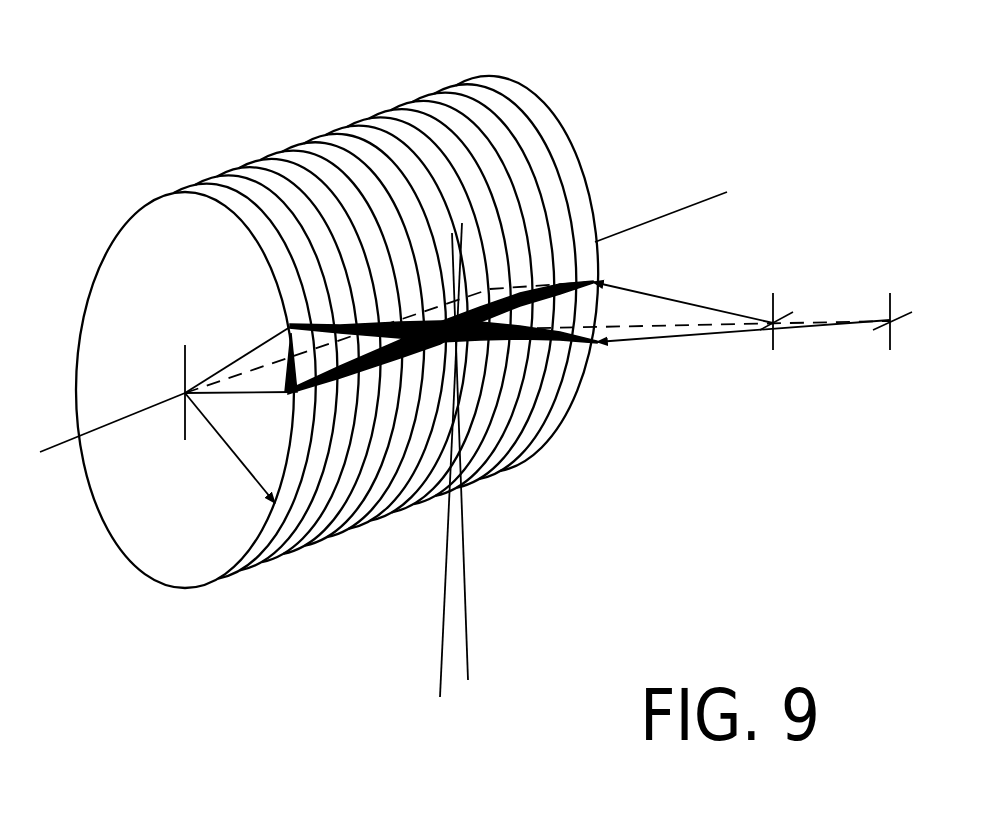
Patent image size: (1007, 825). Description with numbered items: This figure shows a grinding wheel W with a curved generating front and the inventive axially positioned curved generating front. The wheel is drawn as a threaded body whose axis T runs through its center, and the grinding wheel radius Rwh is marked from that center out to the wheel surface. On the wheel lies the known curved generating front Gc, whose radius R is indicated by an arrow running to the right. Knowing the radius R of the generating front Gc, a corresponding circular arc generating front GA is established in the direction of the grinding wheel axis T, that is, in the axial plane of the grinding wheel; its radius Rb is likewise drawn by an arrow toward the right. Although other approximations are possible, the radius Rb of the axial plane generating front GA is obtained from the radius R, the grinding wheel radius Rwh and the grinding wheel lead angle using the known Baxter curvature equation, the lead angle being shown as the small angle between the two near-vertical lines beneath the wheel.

The worm W is at (543, 130).
The grinding wheel axis T is at (706, 199).
The radius of axial plane generating front Rb is at (693, 298).
The radius of generating front R is at (678, 338).
The generating front Gc is at (300, 322).
The circular arc generating front GA is at (292, 398).
The grinding wheel radius Rwh is at (221, 448).